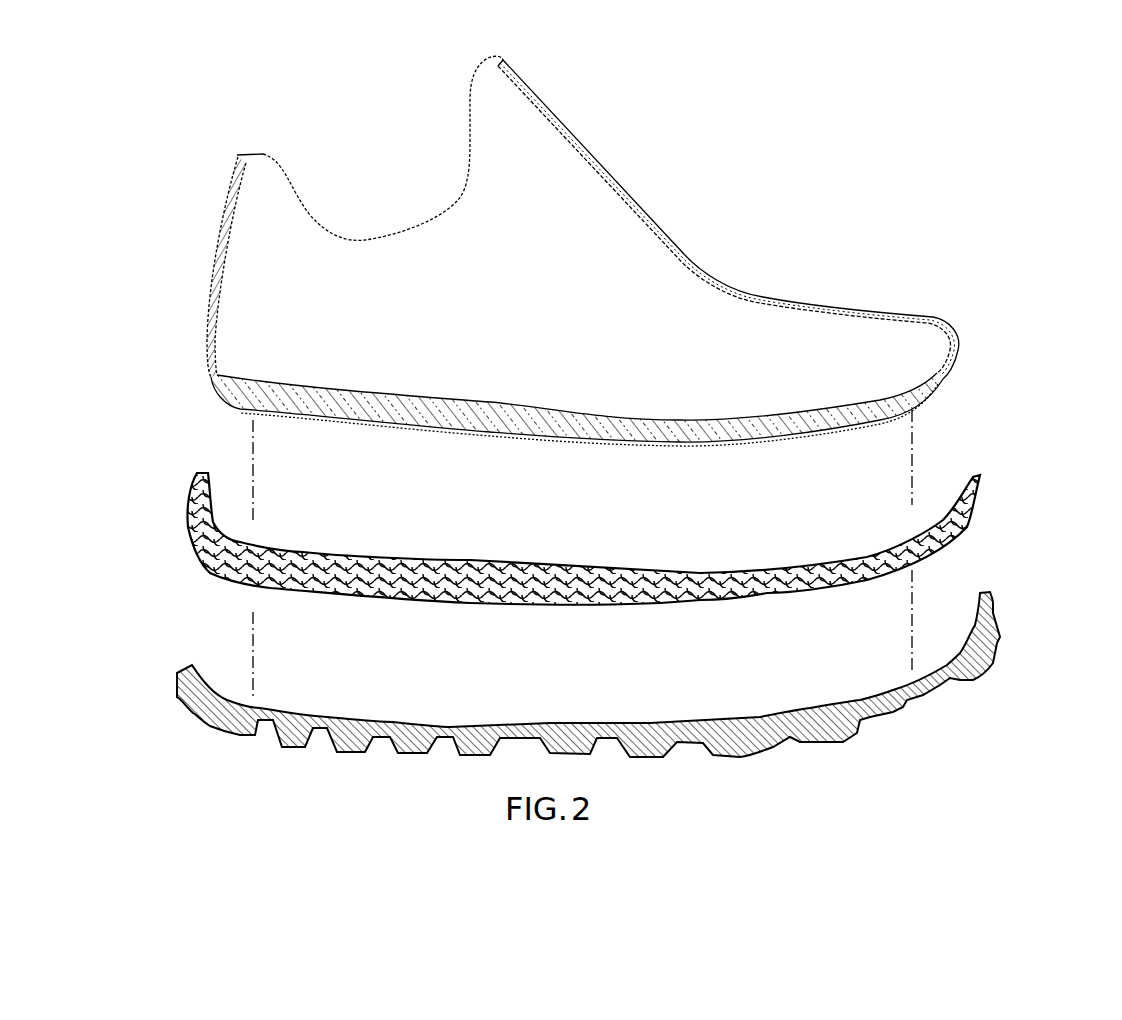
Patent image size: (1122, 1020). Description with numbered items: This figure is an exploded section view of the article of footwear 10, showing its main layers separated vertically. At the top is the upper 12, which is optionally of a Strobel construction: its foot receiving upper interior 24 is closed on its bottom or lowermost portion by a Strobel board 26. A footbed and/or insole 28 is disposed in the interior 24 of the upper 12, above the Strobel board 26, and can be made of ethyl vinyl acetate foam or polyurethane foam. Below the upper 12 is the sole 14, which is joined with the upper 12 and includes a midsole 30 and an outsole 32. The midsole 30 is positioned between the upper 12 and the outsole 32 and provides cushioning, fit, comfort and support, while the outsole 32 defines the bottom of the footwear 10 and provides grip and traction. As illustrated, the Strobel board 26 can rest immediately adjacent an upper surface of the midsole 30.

The article of footwear 10 is at (228, 82).
The upper 12 is at (645, 156).
The sole 14 is at (1035, 475).
The upper interior 24 is at (455, 290).
The Strobel board 26 is at (458, 435).
The footbed and/or insole 28 is at (400, 410).
The midsole 30 is at (190, 515).
The outsole 32 is at (180, 675).